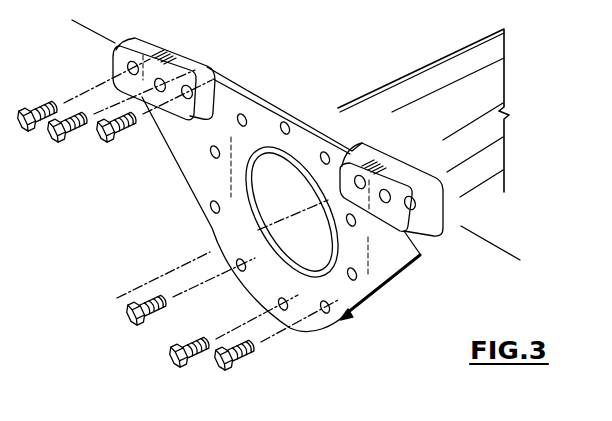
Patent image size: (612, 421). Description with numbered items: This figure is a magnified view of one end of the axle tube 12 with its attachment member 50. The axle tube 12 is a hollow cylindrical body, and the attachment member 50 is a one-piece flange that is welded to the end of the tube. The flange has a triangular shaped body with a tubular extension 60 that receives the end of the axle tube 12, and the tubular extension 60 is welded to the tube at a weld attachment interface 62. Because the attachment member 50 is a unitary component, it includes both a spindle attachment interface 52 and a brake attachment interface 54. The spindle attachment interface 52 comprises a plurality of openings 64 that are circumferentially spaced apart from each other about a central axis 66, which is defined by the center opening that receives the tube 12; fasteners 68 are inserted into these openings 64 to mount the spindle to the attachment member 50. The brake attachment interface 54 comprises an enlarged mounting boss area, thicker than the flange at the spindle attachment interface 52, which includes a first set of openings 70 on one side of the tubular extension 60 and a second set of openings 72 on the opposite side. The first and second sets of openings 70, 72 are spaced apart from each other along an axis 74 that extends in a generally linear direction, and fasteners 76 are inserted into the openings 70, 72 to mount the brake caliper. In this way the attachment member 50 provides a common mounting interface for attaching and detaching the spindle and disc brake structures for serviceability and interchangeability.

The axle tube 12 is at (489, 129).
The attachment member 50 is at (455, 186).
The spindle attachment interface 52 is at (350, 322).
The brake attachment interface 54 is at (395, 162).
The tubular extension 60 is at (284, 98).
The weld attachment interface 62 is at (268, 162).
The openings 64 is at (327, 152).
The central axis 66 is at (120, 288).
The fasteners 68 is at (222, 368).
The first set of openings 70 is at (162, 72).
The second set of openings 72 is at (410, 210).
The axis 74 is at (516, 256).
The fasteners 76 is at (32, 131).